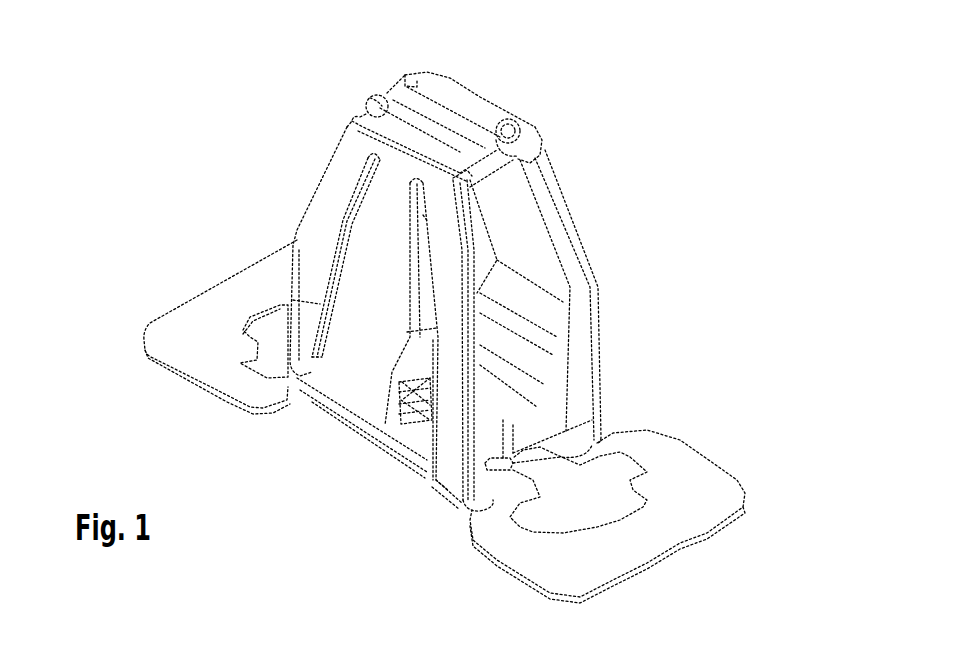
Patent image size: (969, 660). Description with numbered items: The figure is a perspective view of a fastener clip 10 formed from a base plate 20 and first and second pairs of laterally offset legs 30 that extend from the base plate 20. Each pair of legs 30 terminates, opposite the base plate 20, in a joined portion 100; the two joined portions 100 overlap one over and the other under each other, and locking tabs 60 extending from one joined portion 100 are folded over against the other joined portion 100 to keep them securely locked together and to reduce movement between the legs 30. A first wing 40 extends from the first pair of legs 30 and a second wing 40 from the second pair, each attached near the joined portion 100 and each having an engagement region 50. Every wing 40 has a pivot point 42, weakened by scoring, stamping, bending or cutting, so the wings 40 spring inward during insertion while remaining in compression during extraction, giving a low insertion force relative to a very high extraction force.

The fastener clip 10 is at (750, 45).
The base plate 20 is at (705, 513).
The laterally offset legs 30 is at (305, 256).
The wing 40 is at (357, 358).
The pivot point 42 is at (400, 180).
The engagement region 50 is at (420, 415).
The locking tabs 60 is at (378, 108).
The joined portion 100 is at (488, 112).